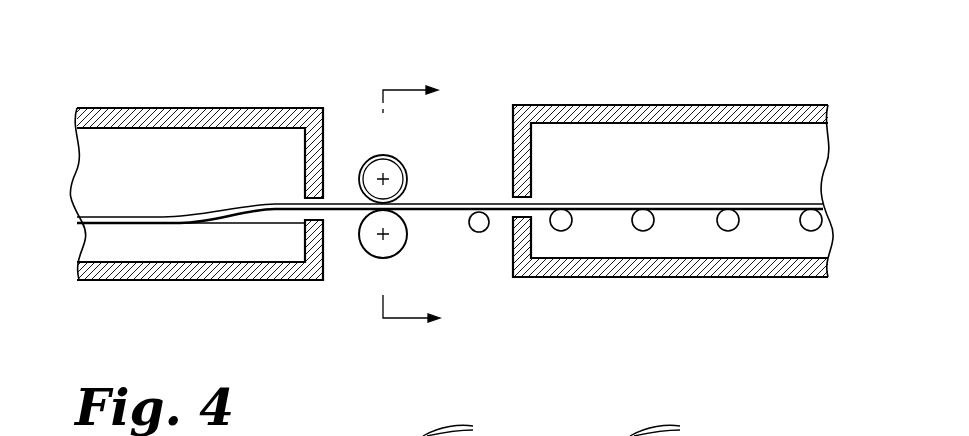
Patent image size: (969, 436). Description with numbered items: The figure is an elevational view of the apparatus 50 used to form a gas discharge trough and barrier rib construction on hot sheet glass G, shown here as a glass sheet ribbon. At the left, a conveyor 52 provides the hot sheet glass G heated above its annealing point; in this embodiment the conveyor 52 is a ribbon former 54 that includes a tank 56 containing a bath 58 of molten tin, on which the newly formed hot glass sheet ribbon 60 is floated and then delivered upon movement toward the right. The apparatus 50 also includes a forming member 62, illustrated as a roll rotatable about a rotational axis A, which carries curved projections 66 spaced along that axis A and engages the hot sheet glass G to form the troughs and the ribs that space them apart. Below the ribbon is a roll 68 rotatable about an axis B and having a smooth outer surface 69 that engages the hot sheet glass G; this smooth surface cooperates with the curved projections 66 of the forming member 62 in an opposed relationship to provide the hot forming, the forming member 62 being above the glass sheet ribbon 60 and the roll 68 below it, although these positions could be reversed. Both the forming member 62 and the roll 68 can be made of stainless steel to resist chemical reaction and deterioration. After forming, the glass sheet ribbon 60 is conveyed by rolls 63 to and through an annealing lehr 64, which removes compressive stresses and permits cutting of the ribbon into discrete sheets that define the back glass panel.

The apparatus 50 is at (399, 62).
The conveyor 52 is at (277, 297).
The ribbon former 54 is at (243, 100).
The tank 56 is at (210, 277).
The bath 58 is at (133, 230).
The glass sheet ribbon 60 is at (222, 206).
The hot sheet glass G is at (277, 201).
The forming member 62 is at (407, 145).
The curved projections 66 is at (360, 178).
The rotational axis A is at (388, 174).
The roll 68 is at (420, 241).
The smooth outer surface 69 is at (360, 228).
The axis B is at (380, 240).
The rolls 63 is at (480, 232).
The annealing lehr 64 is at (640, 70).